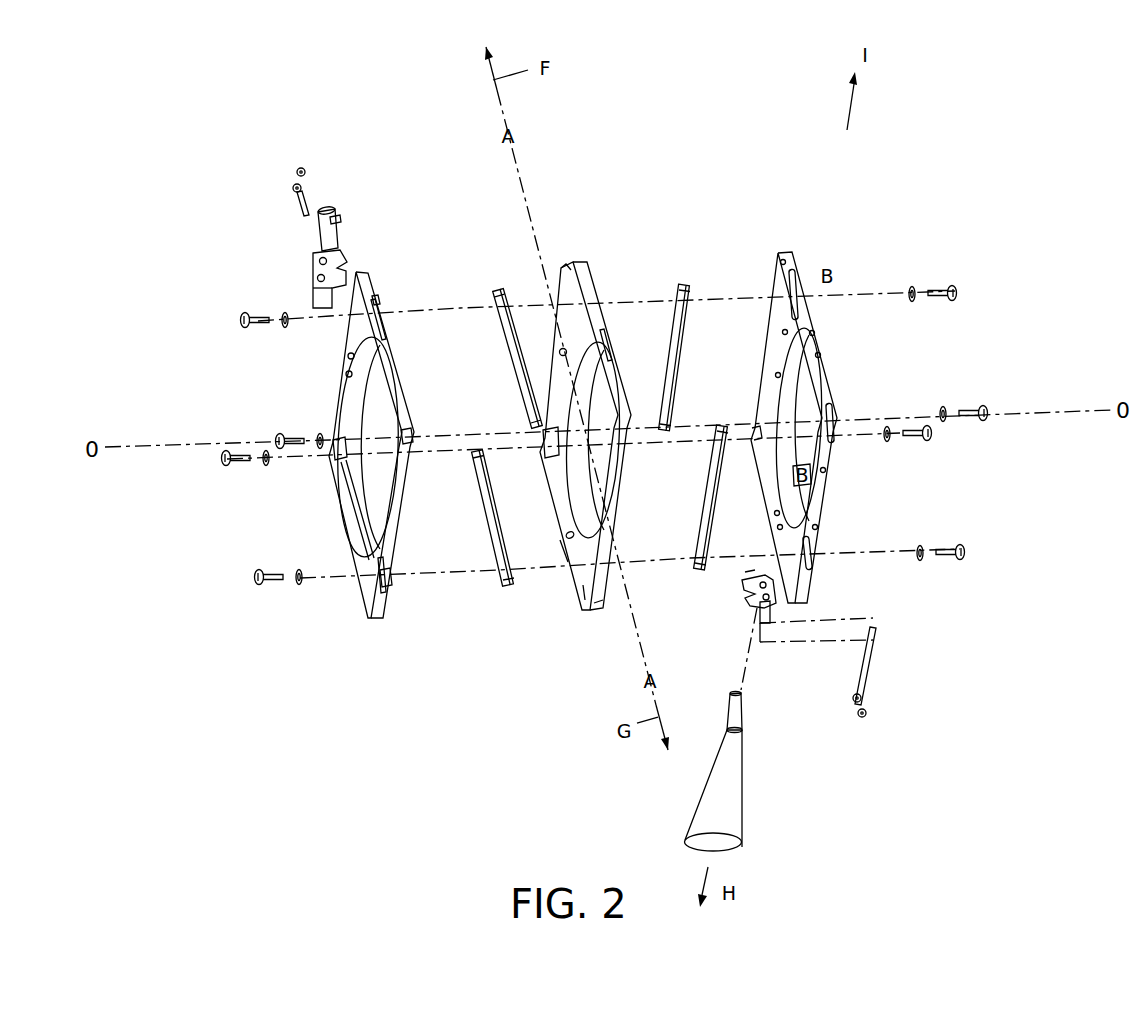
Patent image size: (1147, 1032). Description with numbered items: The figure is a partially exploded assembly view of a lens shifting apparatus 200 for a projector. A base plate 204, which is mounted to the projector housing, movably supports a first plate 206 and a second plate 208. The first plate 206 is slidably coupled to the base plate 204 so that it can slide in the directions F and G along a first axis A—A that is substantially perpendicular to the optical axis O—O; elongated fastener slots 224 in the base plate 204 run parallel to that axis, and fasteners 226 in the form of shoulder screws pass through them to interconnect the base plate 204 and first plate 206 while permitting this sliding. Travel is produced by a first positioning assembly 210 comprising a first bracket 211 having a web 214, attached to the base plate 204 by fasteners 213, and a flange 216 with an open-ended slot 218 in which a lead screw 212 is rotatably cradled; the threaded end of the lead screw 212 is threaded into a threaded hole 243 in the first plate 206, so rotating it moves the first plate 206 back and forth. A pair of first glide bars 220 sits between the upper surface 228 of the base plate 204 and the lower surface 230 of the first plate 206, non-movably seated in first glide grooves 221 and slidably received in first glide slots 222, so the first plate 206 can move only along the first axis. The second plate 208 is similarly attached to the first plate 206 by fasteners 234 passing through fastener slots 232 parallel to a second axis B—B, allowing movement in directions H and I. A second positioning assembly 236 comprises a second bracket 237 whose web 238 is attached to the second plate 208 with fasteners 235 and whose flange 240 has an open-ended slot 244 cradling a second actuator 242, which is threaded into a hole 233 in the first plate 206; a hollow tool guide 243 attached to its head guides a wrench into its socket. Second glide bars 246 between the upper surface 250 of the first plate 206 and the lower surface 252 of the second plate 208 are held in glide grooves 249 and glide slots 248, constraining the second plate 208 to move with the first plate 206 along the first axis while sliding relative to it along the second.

The lens shifting apparatus 200 is at (1007, 178).
The base plate 204 is at (365, 578).
The first plate 206 is at (580, 590).
The second plate 208 is at (799, 257).
The first positioning assembly 210 is at (312, 284).
The first bracket 211 is at (318, 258).
The lead screw 212 is at (333, 198).
The fasteners 213 is at (300, 170).
The web 214 is at (313, 297).
The flange 216 is at (338, 245).
The open-ended slot 218 is at (347, 260).
The first glide bars 220 is at (503, 287).
The first glide grooves 221 is at (387, 345).
The first glide slots 222 is at (568, 270).
The fastener slots 224 is at (373, 297).
The fasteners 226 is at (278, 436).
The upper surface 228 is at (388, 557).
The lower surface 230 is at (556, 508).
The fastener slots 232 is at (795, 283).
The hole 233 is at (568, 562).
The fasteners 234 is at (910, 283).
The fasteners 235 is at (867, 713).
The second positioning assembly 236 is at (743, 583).
The second bracket 237 is at (753, 567).
The web 238 is at (773, 598).
The flange 240 is at (747, 603).
The second actuator 242 is at (743, 715).
The threaded hole / tool guide 243 is at (560, 352).
The open-ended slot 244 is at (747, 600).
The second glide bars 246 is at (686, 284).
The glide slots 248 is at (594, 603).
The glide grooves 249 is at (595, 285).
The upper surface 250 is at (583, 585).
The lower surface 252 is at (757, 348).